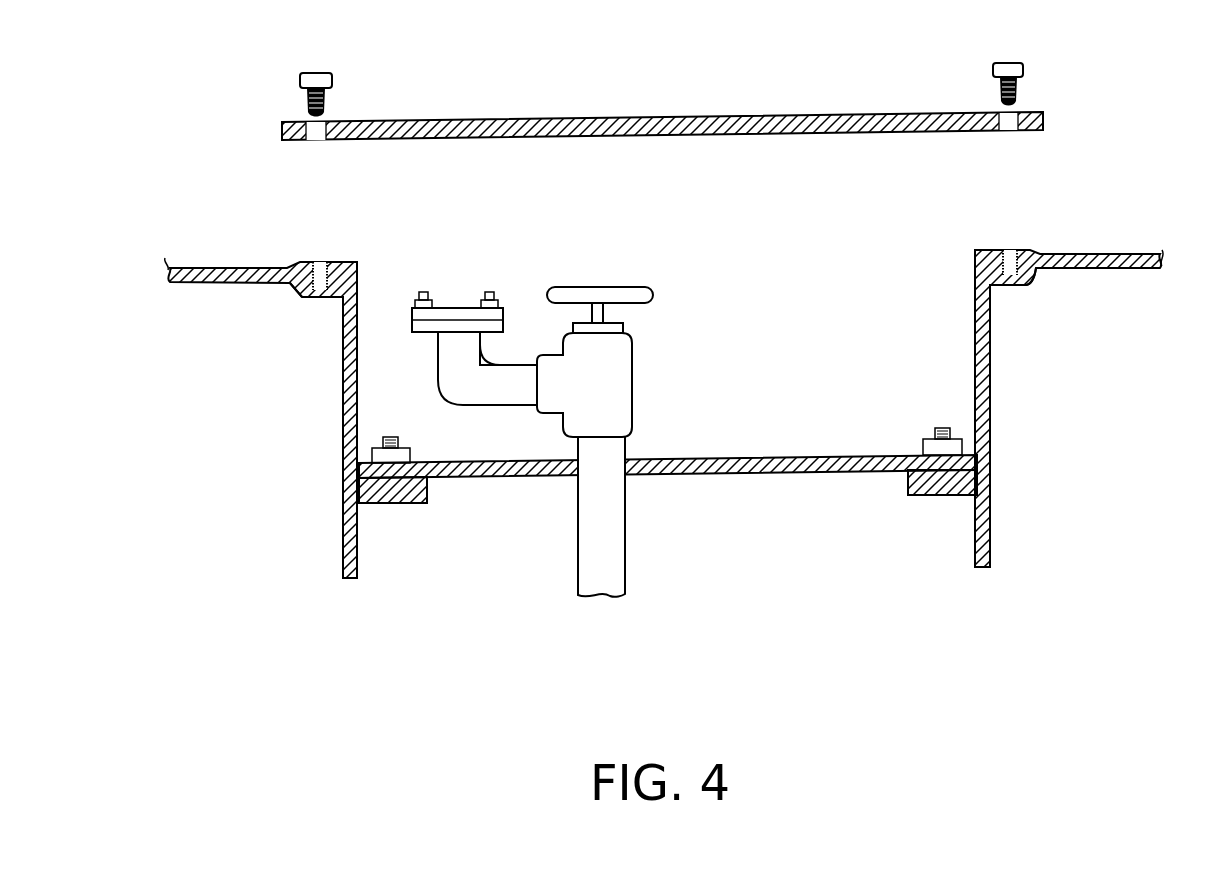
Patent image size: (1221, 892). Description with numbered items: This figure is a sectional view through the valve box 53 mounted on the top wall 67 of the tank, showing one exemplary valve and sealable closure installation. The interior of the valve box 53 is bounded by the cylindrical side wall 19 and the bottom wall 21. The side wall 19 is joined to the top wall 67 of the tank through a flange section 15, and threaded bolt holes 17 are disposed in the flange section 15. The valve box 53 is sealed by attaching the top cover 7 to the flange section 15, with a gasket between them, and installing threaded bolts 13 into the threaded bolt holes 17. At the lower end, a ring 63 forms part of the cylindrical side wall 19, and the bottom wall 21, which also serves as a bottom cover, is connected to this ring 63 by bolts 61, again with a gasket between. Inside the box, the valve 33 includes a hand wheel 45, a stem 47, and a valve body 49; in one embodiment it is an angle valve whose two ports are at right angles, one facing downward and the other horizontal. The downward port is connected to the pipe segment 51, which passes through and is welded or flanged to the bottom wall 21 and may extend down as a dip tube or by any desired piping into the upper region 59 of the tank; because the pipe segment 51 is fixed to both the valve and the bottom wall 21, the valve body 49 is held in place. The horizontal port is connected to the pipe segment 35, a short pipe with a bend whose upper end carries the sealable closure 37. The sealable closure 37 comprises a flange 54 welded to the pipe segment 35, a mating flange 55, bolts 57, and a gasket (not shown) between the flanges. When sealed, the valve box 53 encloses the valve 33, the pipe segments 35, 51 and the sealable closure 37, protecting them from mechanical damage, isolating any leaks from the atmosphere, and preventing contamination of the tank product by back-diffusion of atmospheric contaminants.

The top cover 7 is at (603, 119).
The threaded bolts 13 is at (306, 102).
The flange section 15 is at (306, 298).
The threaded bolt holes 17 is at (316, 264).
The cylindrical side wall 19 is at (343, 432).
The bottom wall 21 is at (765, 457).
The valve 33 is at (686, 274).
The pipe segment 35 is at (472, 405).
The sealable closure 37 is at (518, 288).
The hand wheel 45 is at (590, 287).
The stem 47 is at (605, 313).
The valve body 49 is at (632, 393).
The pipe segment 51 is at (625, 542).
The valve box 53 is at (818, 308).
The flange 54 is at (420, 333).
The flange 55 is at (412, 310).
The bolts 57 is at (490, 292).
The upper region 59 is at (213, 330).
The bolts 61 is at (390, 437).
The ring 63 is at (950, 495).
The top wall 67 is at (233, 268).